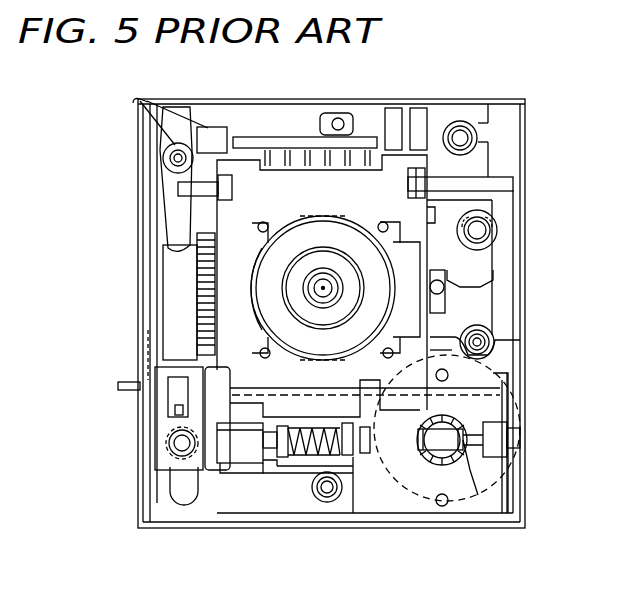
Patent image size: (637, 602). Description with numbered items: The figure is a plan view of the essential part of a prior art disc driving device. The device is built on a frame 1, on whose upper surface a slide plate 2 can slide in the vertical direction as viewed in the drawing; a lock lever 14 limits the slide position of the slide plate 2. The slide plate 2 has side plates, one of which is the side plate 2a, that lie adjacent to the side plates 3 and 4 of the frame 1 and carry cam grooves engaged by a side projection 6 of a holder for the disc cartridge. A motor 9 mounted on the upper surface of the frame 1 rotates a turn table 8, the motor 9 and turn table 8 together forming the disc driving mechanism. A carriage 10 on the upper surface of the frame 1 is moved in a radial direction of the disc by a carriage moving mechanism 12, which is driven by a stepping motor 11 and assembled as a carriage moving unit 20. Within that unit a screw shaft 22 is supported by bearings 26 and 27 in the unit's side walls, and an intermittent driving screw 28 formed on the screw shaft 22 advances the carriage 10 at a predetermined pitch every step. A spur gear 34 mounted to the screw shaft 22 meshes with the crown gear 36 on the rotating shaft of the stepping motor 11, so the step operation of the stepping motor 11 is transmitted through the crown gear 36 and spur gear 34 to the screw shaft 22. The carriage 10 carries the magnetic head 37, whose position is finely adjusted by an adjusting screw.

The frame 1 is at (527, 131).
The slide plate 2 is at (155, 500).
The side plate of the slide plate 2a is at (145, 293).
The side plate of the frame 3 is at (140, 418).
The side plate of the frame 4 is at (527, 178).
The side projection 6 is at (525, 222).
The turn table 8 is at (348, 313).
The motor 9 is at (383, 297).
The carriage 10 is at (418, 355).
The stepping motor 11 is at (490, 497).
The carriage moving mechanism 12 is at (279, 477).
The lock lever 14 is at (275, 108).
The carriage moving unit 20 is at (365, 490).
The screw shaft 22 is at (432, 440).
The bearing 26 is at (247, 452).
The bearing 27 is at (495, 430).
The intermittent driving screw 28 is at (302, 452).
The spur gear 34 is at (463, 440).
The crown gear 36 is at (453, 455).
The magnetic head 37 is at (465, 262).